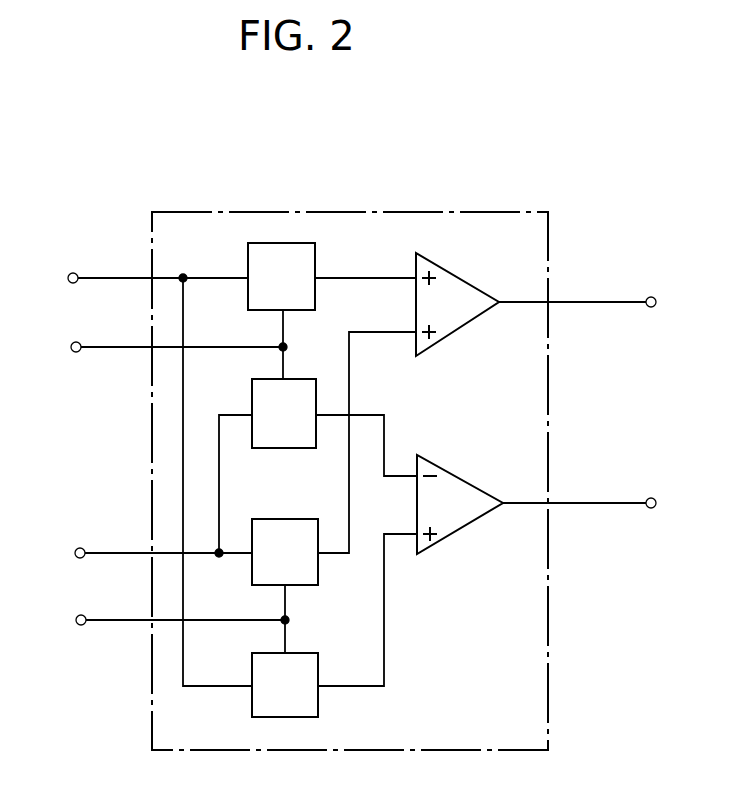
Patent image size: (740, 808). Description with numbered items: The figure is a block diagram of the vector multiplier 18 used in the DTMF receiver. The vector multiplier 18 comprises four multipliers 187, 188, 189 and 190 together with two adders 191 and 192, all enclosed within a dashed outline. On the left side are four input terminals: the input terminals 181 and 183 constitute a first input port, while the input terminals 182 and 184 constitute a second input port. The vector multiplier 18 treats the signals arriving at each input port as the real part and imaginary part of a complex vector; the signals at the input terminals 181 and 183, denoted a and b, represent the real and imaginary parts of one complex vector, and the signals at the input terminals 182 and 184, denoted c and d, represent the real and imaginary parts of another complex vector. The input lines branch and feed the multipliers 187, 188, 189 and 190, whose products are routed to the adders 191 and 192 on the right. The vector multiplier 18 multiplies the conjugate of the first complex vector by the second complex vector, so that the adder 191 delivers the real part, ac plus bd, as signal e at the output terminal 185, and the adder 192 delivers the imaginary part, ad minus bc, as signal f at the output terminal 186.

The vector multiplier 18 is at (468, 200).
The input terminal 181 is at (78, 273).
The input terminal 182 is at (74, 352).
The input terminal 183 is at (81, 548).
The input terminal 184 is at (80, 626).
The output terminal 185 is at (653, 296).
The output terminal 186 is at (651, 497).
The multiplier 187 is at (290, 243).
The multiplier 188 is at (275, 448).
The multiplier 189 is at (318, 565).
The multiplier 190 is at (318, 697).
The adder 191 is at (470, 326).
The adder 192 is at (462, 521).